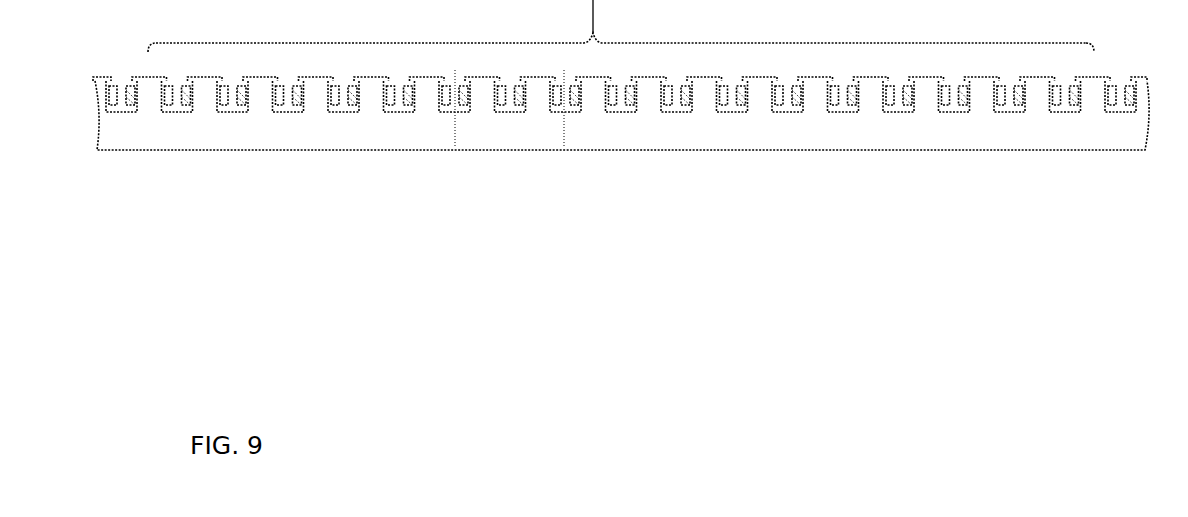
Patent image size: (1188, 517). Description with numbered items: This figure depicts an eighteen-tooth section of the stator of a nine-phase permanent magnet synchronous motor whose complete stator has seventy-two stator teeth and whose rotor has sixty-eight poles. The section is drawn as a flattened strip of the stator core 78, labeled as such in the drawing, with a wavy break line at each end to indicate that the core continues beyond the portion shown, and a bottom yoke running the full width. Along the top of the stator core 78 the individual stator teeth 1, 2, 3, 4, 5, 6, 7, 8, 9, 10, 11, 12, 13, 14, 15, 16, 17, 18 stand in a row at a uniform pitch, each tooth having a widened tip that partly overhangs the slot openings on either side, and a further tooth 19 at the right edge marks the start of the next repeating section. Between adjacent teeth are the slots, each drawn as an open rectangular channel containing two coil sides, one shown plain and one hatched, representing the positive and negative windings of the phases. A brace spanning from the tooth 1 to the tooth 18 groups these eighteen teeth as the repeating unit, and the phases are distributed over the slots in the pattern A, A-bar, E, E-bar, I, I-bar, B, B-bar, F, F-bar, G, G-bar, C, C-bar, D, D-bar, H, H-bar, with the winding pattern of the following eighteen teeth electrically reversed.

The stator core 78 is at (621, 75).
The tooth 1 is at (149, 72).
The tooth 2 is at (205, 72).
The tooth 3 is at (260, 72).
The tooth 4 is at (316, 72).
The tooth 5 is at (371, 72).
The tooth 6 is at (427, 72).
The tooth 7 is at (482, 72).
The tooth 8 is at (538, 72).
The tooth 9 is at (593, 72).
The tooth 10 is at (649, 72).
The tooth 11 is at (704, 72).
The tooth 12 is at (760, 72).
The tooth 13 is at (815, 72).
The tooth 14 is at (871, 72).
The tooth 15 is at (926, 72).
The tooth 16 is at (982, 72).
The tooth 17 is at (1037, 72).
The tooth 18 is at (1093, 72).
The tooth 19 is at (1142, 72).